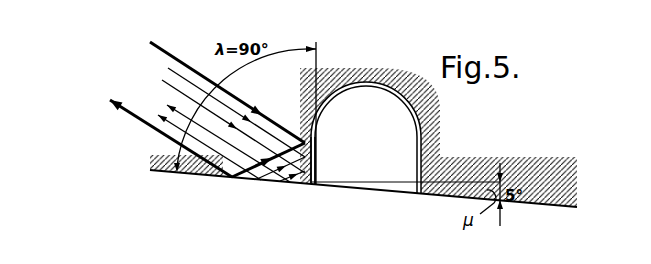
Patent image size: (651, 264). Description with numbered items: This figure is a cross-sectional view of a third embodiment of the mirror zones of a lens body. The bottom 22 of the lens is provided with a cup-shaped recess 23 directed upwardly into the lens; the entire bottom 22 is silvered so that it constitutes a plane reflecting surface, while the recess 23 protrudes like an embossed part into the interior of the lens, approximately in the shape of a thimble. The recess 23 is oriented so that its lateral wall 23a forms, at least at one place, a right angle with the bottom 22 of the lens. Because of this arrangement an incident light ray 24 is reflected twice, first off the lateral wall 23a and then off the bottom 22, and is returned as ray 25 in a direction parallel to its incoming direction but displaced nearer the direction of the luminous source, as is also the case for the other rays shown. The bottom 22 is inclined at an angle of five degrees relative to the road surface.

The bottom of the lens 22 is at (535, 207).
The cup-shaped recess 23 is at (416, 141).
The lateral wall 23a is at (317, 137).
The incident light ray 24 is at (174, 57).
The returned light ray 25 is at (143, 121).